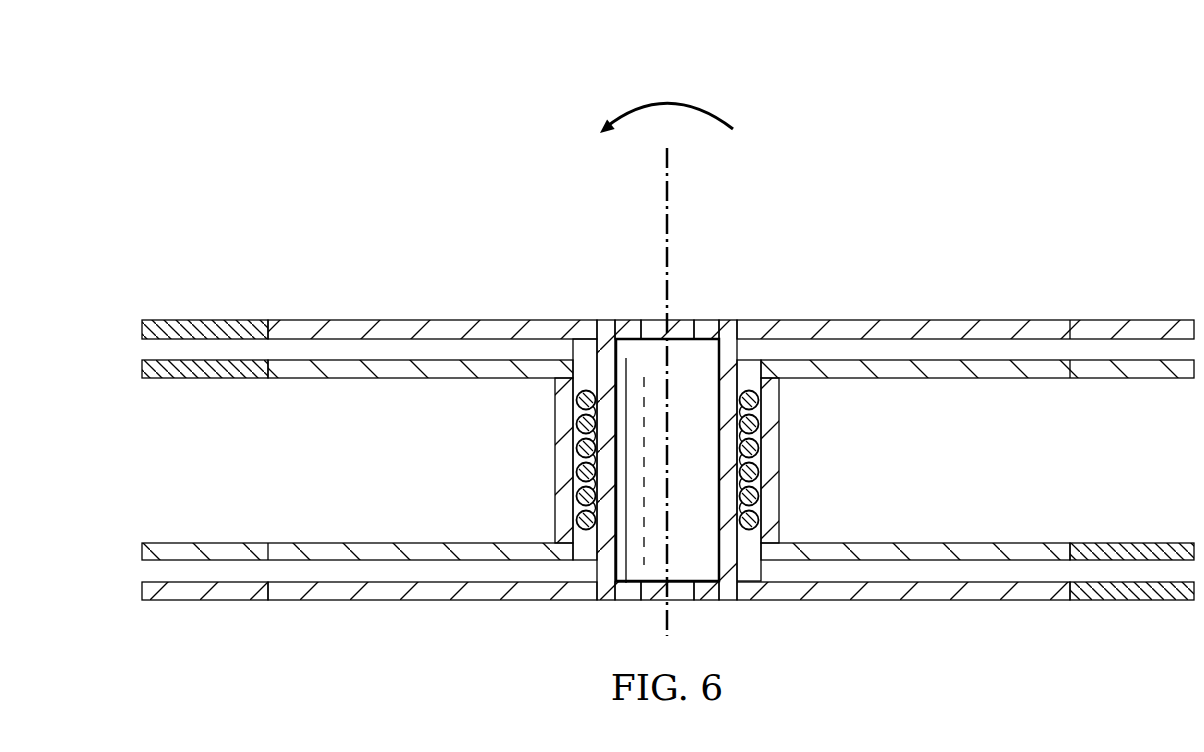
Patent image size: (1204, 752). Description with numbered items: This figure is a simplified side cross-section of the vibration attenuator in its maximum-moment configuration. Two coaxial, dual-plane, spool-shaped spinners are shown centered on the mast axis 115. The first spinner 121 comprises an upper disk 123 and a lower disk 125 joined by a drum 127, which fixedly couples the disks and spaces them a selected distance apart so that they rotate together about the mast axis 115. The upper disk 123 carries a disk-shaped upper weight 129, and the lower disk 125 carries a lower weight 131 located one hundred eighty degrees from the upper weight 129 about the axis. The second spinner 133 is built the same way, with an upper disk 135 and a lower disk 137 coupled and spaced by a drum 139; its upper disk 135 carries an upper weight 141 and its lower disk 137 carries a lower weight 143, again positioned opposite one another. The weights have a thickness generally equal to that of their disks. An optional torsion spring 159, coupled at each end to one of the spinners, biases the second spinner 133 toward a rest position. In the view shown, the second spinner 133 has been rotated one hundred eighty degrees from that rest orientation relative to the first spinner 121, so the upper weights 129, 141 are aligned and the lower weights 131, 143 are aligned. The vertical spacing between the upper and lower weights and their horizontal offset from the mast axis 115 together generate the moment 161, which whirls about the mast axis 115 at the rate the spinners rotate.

The mast axis 115 is at (665, 241).
The first spinner 121 is at (969, 318).
The upper disk 123 is at (822, 320).
The lower disk 125 is at (897, 600).
The drum 127 is at (737, 374).
The upper weight 129 is at (203, 320).
The lower weight 131 is at (1125, 600).
The second spinner 133 is at (410, 382).
The upper disk 135 is at (822, 380).
The lower disk 137 is at (940, 543).
The drum 139 is at (553, 412).
The upper weight 141 is at (200, 380).
The lower weight 143 is at (1142, 543).
The torsion spring 159 is at (587, 530).
The moment 161 is at (683, 103).